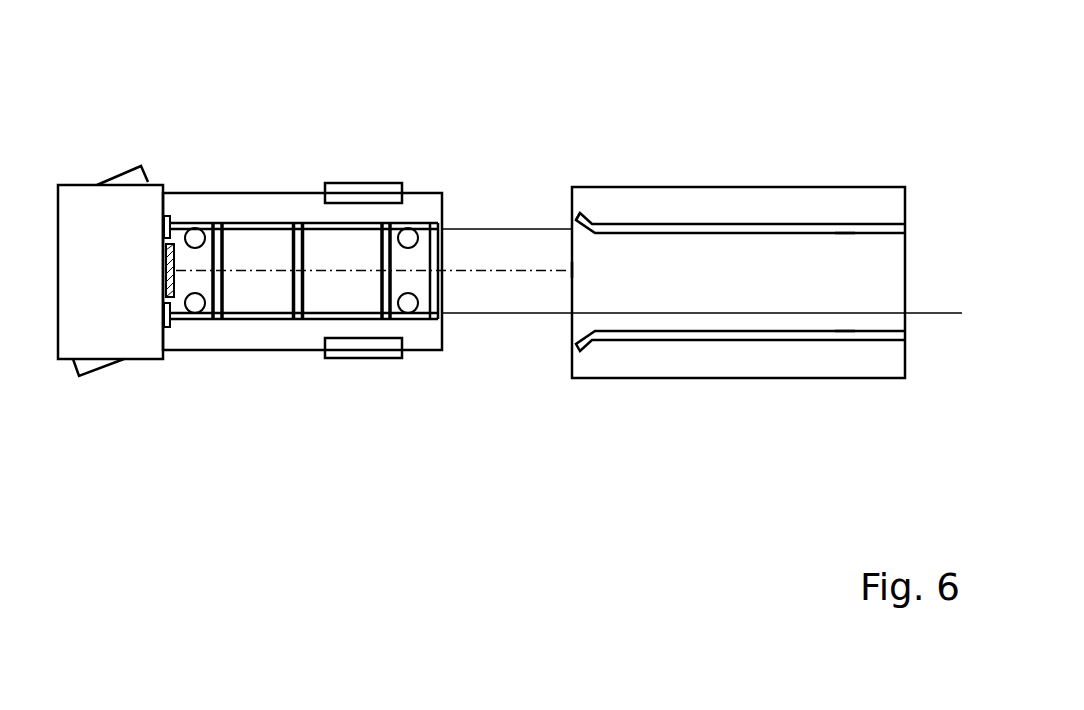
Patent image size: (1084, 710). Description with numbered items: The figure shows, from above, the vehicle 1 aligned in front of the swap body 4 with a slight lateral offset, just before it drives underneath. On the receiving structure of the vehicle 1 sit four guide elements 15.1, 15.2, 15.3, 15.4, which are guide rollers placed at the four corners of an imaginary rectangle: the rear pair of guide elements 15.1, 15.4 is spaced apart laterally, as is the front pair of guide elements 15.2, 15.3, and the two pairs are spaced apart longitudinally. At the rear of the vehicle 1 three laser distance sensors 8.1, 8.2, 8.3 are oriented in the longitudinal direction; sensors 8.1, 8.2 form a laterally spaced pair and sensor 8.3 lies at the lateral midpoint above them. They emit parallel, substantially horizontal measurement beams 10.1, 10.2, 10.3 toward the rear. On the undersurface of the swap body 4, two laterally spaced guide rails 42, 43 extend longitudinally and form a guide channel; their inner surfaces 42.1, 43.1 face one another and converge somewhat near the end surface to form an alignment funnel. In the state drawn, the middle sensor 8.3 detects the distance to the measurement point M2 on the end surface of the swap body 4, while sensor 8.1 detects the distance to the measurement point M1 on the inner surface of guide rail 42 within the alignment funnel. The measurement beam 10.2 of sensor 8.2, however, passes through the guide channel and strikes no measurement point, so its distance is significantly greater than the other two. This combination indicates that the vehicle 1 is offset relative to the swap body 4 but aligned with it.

The vehicle 1 is at (203, 150).
The swap body 4 is at (773, 157).
The distance sensor 8.1 is at (165, 226).
The distance sensor 8.2 is at (165, 326).
The distance sensor 8.3 is at (166, 268).
The measurement beam 10.1 is at (490, 229).
The measurement beam 10.2 is at (488, 313).
The measurement beam 10.3 is at (520, 272).
The guide element 15.1 is at (409, 303).
The guide element 15.2 is at (196, 303).
The guide element 15.3 is at (196, 237).
The guide element 15.4 is at (409, 237).
The guide rail 42 is at (814, 222).
The inner surface 42.1 is at (844, 237).
The guide rail 43 is at (816, 342).
The inner surface 43.1 is at (844, 328).
The measurement point M1 is at (588, 217).
The measurement point M2 is at (570, 266).